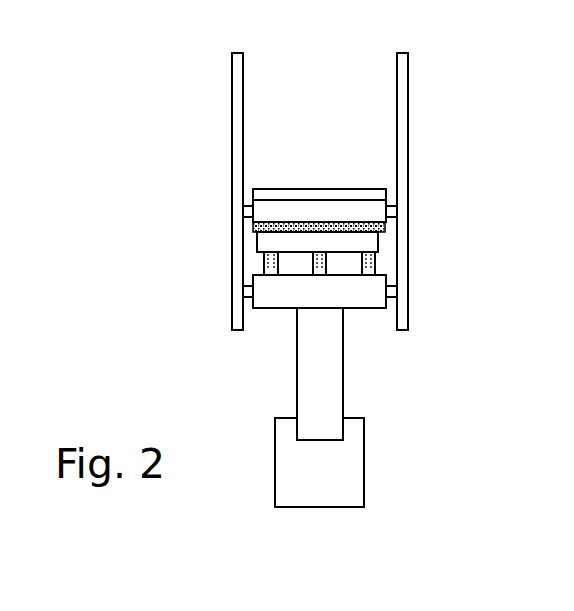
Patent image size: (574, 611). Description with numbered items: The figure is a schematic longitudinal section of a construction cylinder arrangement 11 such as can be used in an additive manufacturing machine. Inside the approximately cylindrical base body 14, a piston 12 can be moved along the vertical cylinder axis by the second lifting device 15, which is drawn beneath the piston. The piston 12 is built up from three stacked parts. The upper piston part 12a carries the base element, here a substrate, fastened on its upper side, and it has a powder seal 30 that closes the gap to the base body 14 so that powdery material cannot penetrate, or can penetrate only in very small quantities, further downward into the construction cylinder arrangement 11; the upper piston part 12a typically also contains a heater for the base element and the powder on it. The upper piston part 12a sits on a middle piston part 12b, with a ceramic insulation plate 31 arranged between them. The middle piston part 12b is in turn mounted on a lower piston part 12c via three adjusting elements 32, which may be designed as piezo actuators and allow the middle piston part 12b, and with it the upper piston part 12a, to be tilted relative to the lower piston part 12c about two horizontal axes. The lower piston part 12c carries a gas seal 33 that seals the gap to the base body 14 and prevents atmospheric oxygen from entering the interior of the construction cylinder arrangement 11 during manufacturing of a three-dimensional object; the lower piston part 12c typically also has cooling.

The construction cylinder arrangement 11 is at (213, 115).
The base body 14 is at (238, 145).
The upper piston part 12a is at (331, 208).
The powder seal 30 is at (250, 212).
The ceramic insulation plate 31 is at (252, 227).
The middle piston part 12b is at (373, 243).
The adjusting elements 32 is at (264, 268).
The gas seal 33 is at (248, 290).
The lower piston part 12c is at (283, 301).
The piston 12 is at (353, 330).
The second lifting device 15 is at (364, 480).